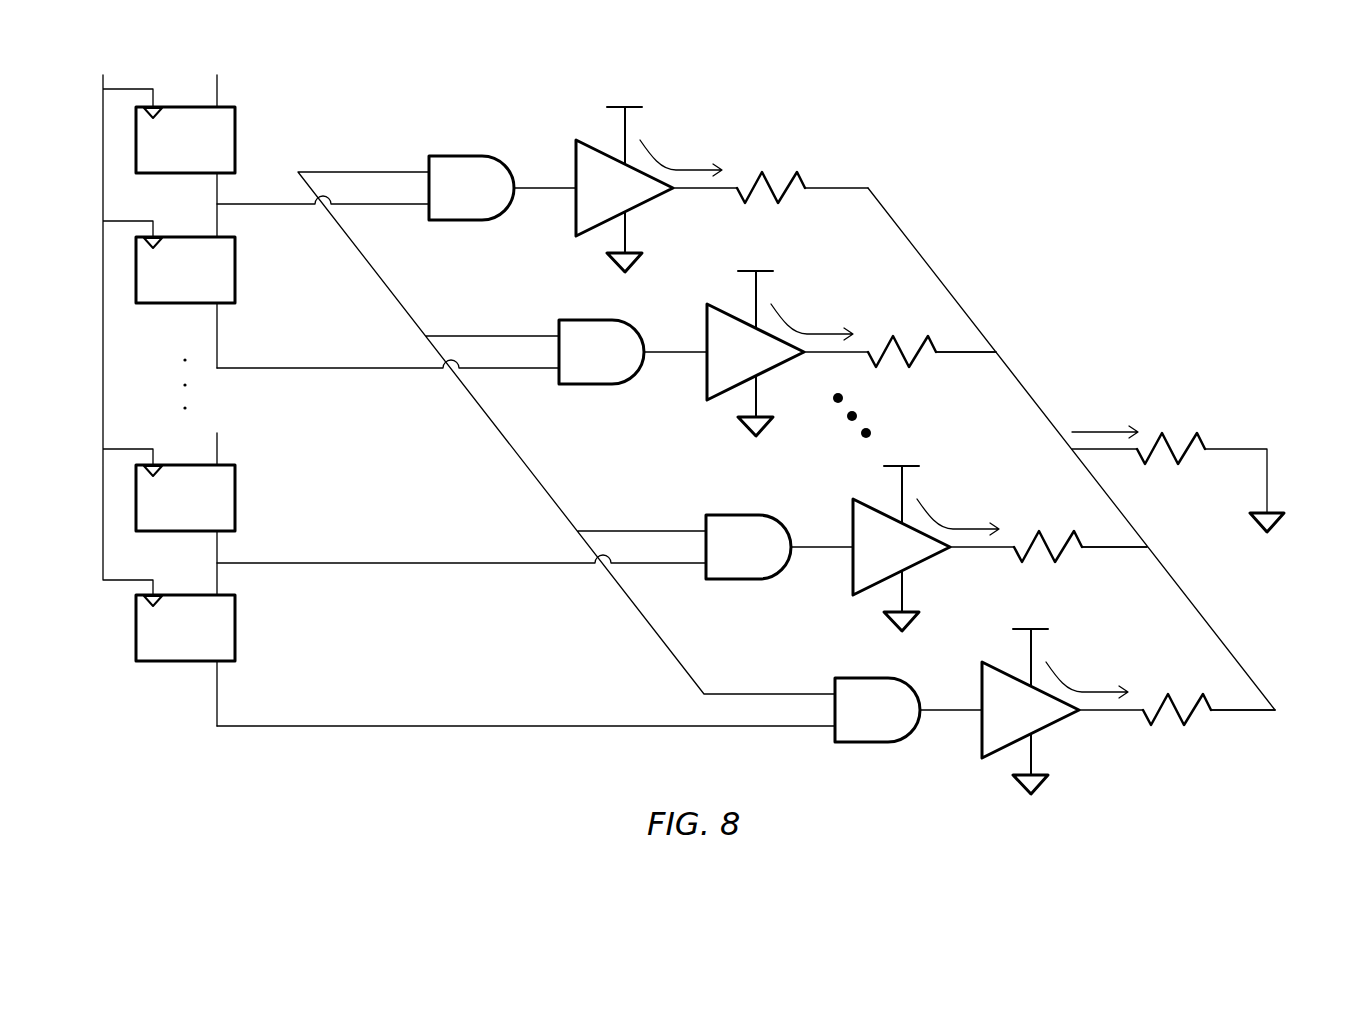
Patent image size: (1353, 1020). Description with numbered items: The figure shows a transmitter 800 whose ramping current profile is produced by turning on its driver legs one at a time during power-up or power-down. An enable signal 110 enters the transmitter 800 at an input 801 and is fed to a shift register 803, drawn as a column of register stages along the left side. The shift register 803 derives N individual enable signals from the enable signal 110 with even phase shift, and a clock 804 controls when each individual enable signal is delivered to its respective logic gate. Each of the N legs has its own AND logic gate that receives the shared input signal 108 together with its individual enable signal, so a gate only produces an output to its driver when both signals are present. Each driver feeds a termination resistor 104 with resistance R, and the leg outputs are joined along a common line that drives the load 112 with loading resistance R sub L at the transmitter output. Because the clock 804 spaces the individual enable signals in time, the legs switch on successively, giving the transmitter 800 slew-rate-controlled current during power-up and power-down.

The transmitter 800 is at (984, 124).
The input 801 is at (219, 105).
The shift register 803 is at (173, 45).
The clock 804 is at (119, 324).
The enable signal 110 is at (217, 389).
The input signal 108 is at (513, 448).
The termination resistor 104 is at (788, 202).
The load 112 is at (1185, 463).